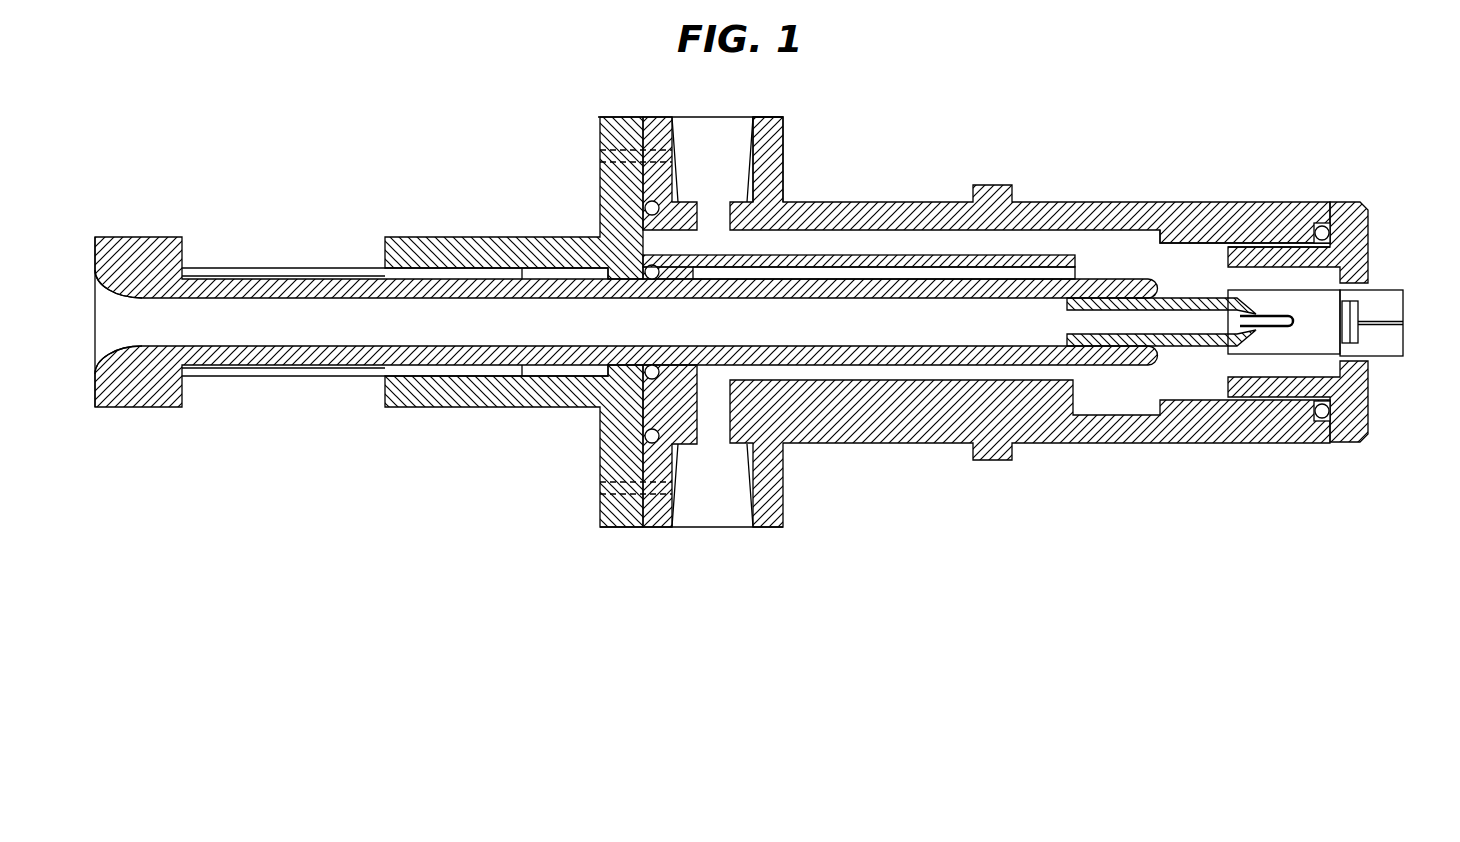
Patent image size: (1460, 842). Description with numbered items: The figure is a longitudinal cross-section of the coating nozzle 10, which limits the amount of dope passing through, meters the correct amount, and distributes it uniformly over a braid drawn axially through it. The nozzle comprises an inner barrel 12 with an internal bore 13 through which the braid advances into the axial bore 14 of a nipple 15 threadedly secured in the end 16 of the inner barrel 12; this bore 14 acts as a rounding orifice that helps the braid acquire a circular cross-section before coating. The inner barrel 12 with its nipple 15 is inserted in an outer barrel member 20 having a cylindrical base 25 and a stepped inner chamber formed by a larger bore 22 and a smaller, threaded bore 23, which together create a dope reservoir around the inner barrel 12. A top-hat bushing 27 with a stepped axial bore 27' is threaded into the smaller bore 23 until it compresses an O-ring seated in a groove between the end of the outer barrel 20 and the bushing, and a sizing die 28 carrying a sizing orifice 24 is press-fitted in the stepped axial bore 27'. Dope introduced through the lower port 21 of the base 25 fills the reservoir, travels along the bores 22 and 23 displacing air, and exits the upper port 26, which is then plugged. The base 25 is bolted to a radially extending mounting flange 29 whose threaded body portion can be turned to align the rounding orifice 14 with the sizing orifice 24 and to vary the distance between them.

The coating nozzle 10 is at (425, 494).
The inner barrel 12 is at (160, 237).
The internal bore 13 is at (258, 299).
The axial bore 14 is at (1283, 321).
The nipple 15 is at (1178, 350).
The end of the inner barrel 16 is at (1082, 280).
The outer barrel member 20 is at (886, 445).
The lower port 21 is at (745, 492).
The larger bore 22 is at (888, 232).
The smaller bore 23 is at (1203, 248).
The sizing orifice 24 is at (1402, 323).
The cylindrical base 25 is at (785, 150).
The upper port 26 is at (678, 138).
The top-hat bushing 27 is at (1335, 320).
The stepped axial bore 27' is at (1295, 435).
The sizing die 28 is at (1393, 290).
The mounting flange 29 is at (480, 237).